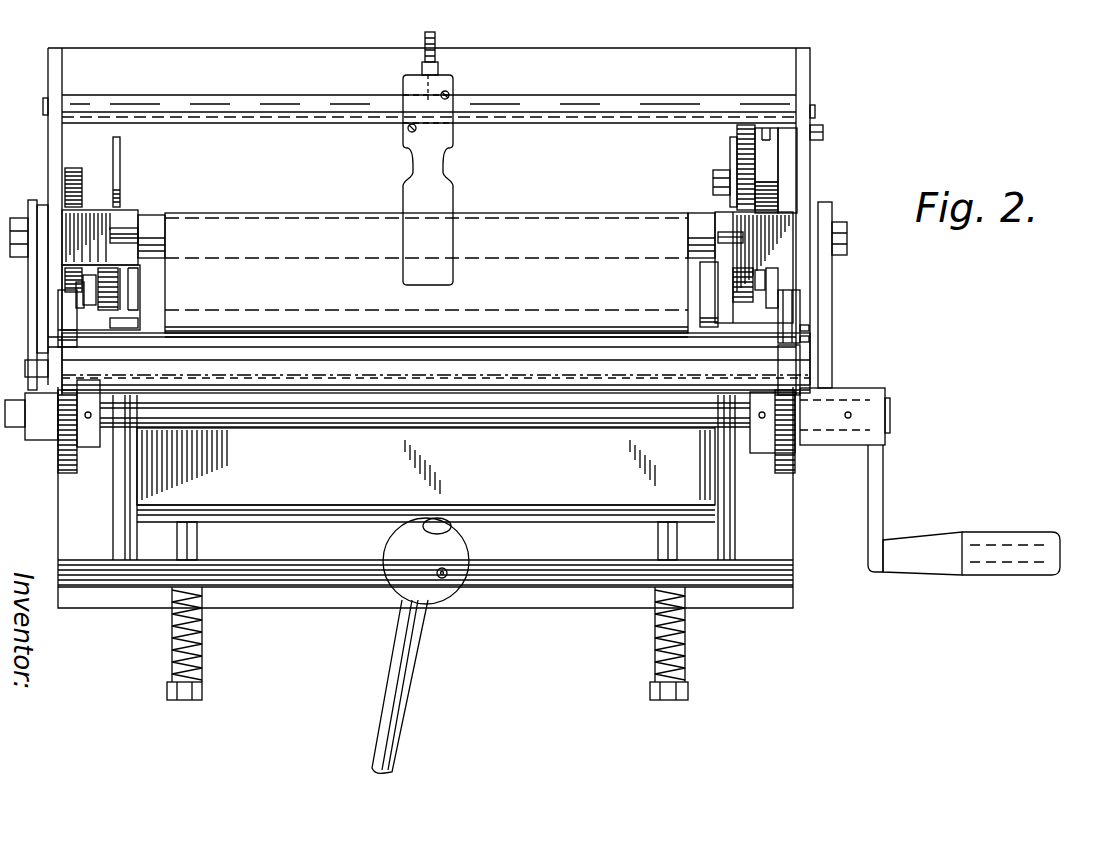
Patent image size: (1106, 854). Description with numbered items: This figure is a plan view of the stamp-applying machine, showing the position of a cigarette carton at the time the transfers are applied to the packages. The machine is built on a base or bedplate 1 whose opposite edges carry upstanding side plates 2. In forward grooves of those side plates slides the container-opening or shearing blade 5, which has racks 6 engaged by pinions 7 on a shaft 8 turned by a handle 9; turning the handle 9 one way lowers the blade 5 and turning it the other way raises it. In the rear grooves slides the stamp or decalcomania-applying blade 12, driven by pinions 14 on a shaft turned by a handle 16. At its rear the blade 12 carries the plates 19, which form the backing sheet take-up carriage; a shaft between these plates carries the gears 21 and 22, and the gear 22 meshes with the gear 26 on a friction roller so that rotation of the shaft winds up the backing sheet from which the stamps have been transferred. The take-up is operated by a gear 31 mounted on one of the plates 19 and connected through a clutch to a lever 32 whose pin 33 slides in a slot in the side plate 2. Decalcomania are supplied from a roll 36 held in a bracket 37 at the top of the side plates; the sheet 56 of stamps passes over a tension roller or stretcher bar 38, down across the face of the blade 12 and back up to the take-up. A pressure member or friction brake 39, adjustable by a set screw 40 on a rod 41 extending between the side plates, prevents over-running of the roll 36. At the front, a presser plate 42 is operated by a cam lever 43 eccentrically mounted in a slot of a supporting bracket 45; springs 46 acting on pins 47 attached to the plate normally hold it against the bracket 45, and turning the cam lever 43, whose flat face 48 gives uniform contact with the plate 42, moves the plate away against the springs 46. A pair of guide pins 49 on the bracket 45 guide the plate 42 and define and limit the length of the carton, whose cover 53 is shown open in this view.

The base or bedplate 1 is at (780, 511).
The side plates 2 is at (48, 150).
The container-opening or shearing blade 5 is at (436, 363).
The racks 6 is at (72, 353).
The pinions 7 is at (68, 474).
The shaft 8 is at (514, 420).
The handle 9 is at (885, 503).
The stamp or decalcomania-applying blade 12 is at (803, 330).
The pinions 14 is at (78, 170).
The handle 16 is at (832, 278).
The plates 19 is at (121, 166).
The gear 21 is at (740, 290).
The gear 22 is at (106, 250).
The gear 26 is at (140, 304).
The gear 31 is at (736, 150).
The lever 32 is at (790, 158).
The pin 33 is at (825, 130).
The roll 36 is at (697, 228).
The bracket 37 is at (140, 284).
The tension roller or stretcher bar 38 is at (697, 314).
The pressure member or friction brake 39 is at (440, 193).
The set screw 40 is at (436, 45).
The rod 41 is at (540, 98).
The presser plate 42 is at (532, 516).
The cam lever 43 is at (398, 543).
The supporting bracket 45 is at (556, 578).
The springs 46 is at (210, 657).
The pins 47 is at (198, 540).
The flat face 48 is at (447, 528).
The guide pins 49 is at (118, 528).
The cover 53 is at (382, 470).
The sheet 56 is at (286, 210).